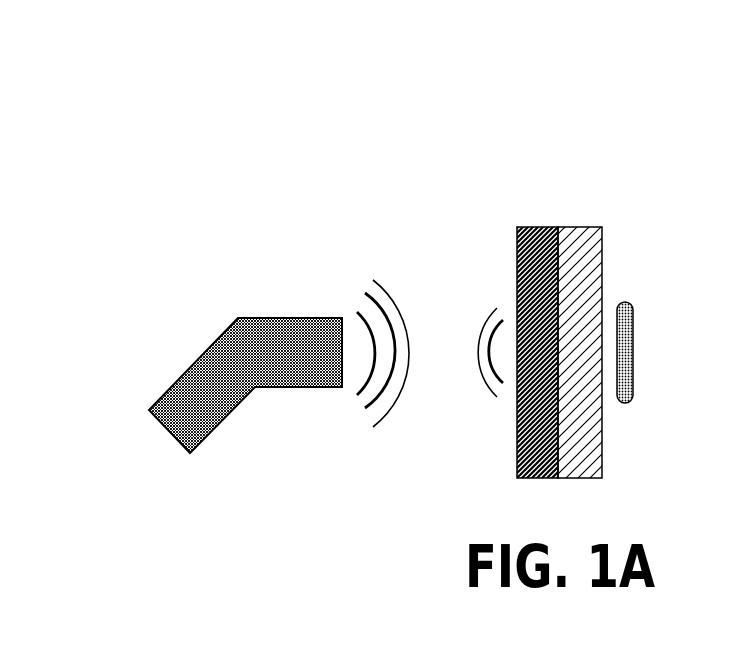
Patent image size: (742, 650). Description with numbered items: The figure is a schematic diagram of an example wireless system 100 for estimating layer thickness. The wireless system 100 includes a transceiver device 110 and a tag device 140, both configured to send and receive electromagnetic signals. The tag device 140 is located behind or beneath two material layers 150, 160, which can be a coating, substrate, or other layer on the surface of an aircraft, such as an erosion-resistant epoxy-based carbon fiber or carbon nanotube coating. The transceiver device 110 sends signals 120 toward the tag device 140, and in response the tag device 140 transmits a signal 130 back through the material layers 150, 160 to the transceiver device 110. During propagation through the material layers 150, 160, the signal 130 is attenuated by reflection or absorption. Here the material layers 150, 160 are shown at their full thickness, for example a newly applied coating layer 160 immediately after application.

The wireless system 100 is at (484, 114).
The transceiver device 110 is at (172, 382).
The signals 120 is at (399, 270).
The signal 130 is at (469, 405).
The tag device 140 is at (628, 302).
The material layer 150 is at (602, 243).
The material layer 160 is at (516, 242).